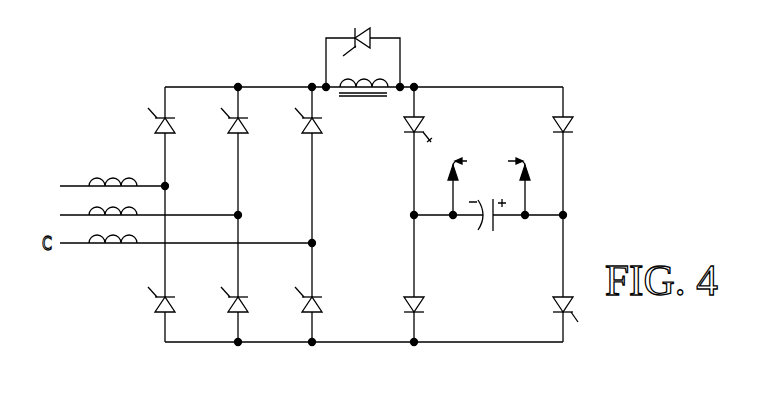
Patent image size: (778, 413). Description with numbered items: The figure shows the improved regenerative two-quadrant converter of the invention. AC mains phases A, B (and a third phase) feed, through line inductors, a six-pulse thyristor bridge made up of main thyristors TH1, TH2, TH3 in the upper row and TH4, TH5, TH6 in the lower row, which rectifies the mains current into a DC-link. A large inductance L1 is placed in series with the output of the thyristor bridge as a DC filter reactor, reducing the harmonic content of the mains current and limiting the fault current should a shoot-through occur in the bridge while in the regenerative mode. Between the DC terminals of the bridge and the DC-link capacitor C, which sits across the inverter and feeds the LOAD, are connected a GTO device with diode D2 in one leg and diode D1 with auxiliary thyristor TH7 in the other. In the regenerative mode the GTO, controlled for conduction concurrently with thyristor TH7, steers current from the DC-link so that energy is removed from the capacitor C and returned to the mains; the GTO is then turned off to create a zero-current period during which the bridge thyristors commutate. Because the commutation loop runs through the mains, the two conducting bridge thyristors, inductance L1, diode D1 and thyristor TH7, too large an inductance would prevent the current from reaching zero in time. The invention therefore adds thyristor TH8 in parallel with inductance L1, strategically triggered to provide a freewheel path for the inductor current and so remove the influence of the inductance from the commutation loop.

The main thyristor TH1 is at (156, 128).
The main thyristor TH2 is at (229, 126).
The main thyristor TH3 is at (303, 126).
The main thyristor TH4 is at (156, 304).
The main thyristor TH5 is at (229, 304).
The main thyristor TH6 is at (303, 304).
The auxiliary thyristor TH7 is at (571, 306).
The additional thyristor TH8 is at (373, 31).
The GTO device GTO is at (425, 126).
The diode D1 is at (571, 127).
The diode D2 is at (425, 303).
The inductance L1 is at (372, 84).
The capacitor C is at (486, 226).
The load LOAD is at (489, 183).
The mains phase A is at (47, 186).
The mains phase B is at (47, 215).